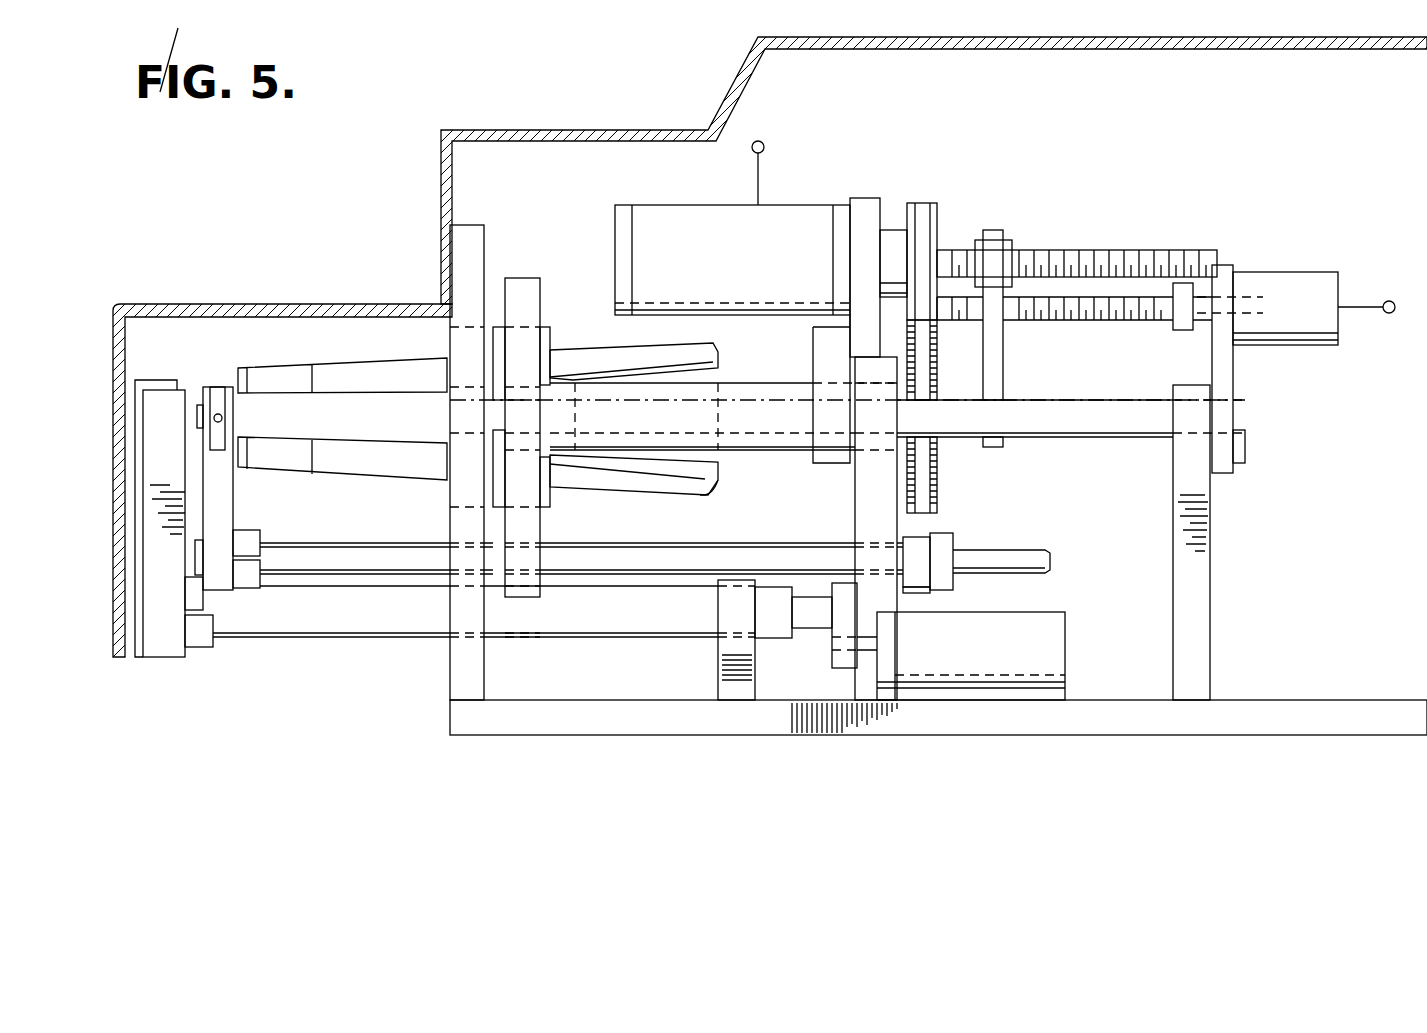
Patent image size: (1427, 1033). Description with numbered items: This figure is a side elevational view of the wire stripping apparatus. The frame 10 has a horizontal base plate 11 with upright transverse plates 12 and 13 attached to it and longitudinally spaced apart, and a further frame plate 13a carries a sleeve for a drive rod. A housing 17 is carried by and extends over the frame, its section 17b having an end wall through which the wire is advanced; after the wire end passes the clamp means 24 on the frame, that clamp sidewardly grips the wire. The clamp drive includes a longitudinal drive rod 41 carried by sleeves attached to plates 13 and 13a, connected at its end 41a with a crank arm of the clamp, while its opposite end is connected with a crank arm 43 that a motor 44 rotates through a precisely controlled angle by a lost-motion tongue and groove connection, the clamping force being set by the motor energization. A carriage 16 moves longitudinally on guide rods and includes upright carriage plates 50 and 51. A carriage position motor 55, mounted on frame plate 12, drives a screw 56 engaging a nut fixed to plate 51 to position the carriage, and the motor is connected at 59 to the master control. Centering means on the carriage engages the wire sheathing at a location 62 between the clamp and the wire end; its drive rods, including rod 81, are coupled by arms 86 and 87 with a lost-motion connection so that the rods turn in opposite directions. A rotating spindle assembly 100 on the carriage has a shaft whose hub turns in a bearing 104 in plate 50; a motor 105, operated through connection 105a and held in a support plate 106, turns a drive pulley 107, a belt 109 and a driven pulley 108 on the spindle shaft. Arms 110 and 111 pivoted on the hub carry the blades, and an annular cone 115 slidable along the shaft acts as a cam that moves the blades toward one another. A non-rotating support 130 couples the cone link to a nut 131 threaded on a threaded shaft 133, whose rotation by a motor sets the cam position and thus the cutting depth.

The frame 10 is at (910, 765).
The horizontal base plate 11 is at (506, 751).
The upright transverse plate 12 is at (1200, 637).
The upright transverse plate 13 is at (452, 678).
The frame plate 13a is at (737, 700).
The carriage 16 is at (455, 405).
The housing 17 is at (433, 165).
The housing section 17b is at (214, 303).
The clamp means 24 is at (146, 472).
The drive rod 41 is at (806, 620).
The end of drive rod 41a is at (590, 620).
The crank arm 43 is at (848, 668).
The motor 44 is at (971, 656).
The carriage plate 50 is at (521, 277).
The carriage plate 51 is at (855, 500).
The carriage position motor 55 is at (1290, 283).
The screw 56 is at (1143, 320).
The connection 59 is at (1376, 313).
The wire engaging location 62 is at (213, 387).
The drive rod 81 is at (1050, 565).
The arm 86 is at (955, 538).
The arm 87 is at (930, 595).
The rotating spindle assembly 100 is at (775, 352).
The bearing 104 is at (492, 330).
The motor 105 is at (732, 334).
The connection 105a is at (755, 184).
The support plate 106 is at (862, 198).
The drive pulley 107 is at (940, 207).
The driven pulley 108 is at (937, 490).
The drive belt 109 is at (930, 462).
The arm 110 is at (580, 348).
The arm 111 is at (583, 478).
The annular cone 115 is at (720, 463).
The support 130 is at (1003, 353).
The nut 131 is at (1012, 240).
The threaded shaft 133 is at (1120, 250).